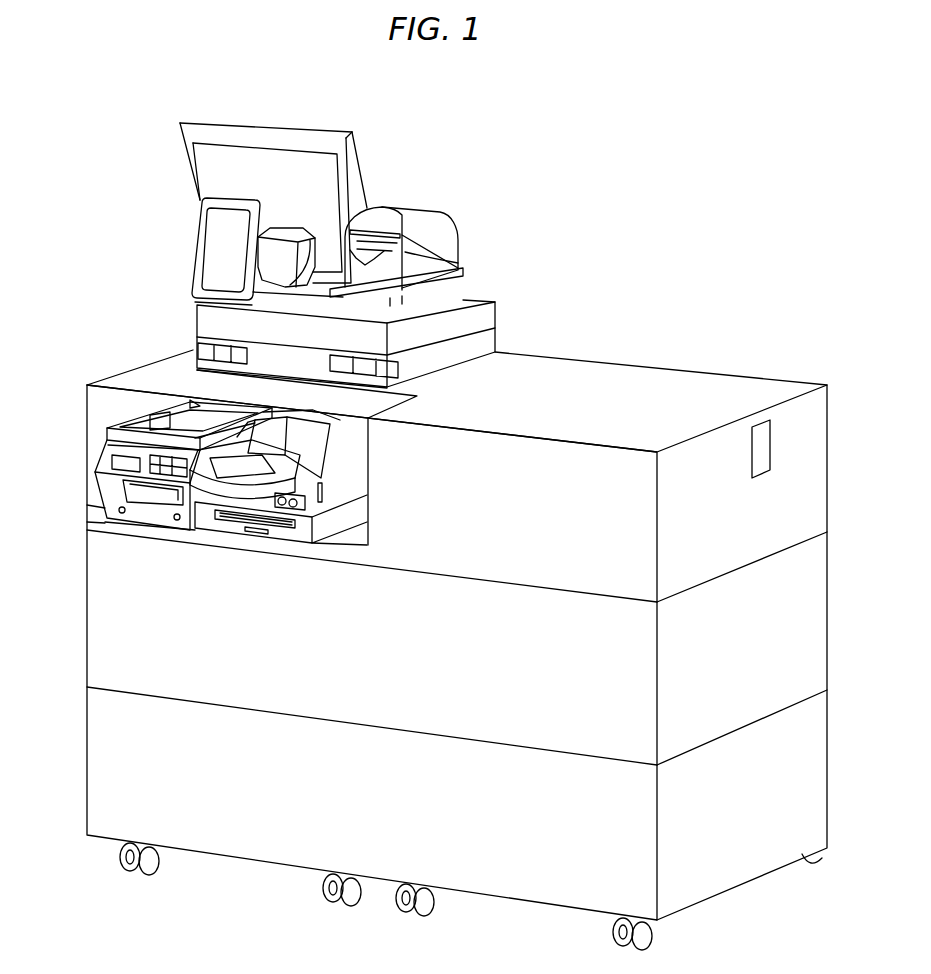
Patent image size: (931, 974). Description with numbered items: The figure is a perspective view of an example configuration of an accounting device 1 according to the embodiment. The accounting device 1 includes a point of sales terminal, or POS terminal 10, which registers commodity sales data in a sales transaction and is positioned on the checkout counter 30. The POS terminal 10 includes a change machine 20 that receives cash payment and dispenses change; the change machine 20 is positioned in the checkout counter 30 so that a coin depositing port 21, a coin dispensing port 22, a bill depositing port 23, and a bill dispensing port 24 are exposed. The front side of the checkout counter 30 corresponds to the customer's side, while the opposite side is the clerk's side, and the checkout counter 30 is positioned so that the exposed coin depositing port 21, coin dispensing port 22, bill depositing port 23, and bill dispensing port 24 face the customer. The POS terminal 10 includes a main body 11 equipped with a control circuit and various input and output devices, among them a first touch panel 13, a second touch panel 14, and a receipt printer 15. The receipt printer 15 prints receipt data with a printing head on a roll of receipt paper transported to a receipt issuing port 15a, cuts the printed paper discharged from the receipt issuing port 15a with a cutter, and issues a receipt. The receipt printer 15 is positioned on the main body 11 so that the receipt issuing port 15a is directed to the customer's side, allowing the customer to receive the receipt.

The accounting device 1 is at (653, 229).
The POS terminal 10 is at (279, 127).
The main body 11 is at (480, 347).
The first touch panel 13 is at (358, 151).
The second touch panel 14 is at (195, 240).
The receipt printer 15 is at (400, 212).
The receipt issuing port 15a is at (458, 263).
The change machine 20 is at (187, 520).
The coin depositing port 21 is at (338, 430).
The coin dispensing port 22 is at (238, 467).
The bill depositing port 23 is at (190, 398).
The bill dispensing port 24 is at (150, 420).
The checkout counter 30 is at (722, 380).